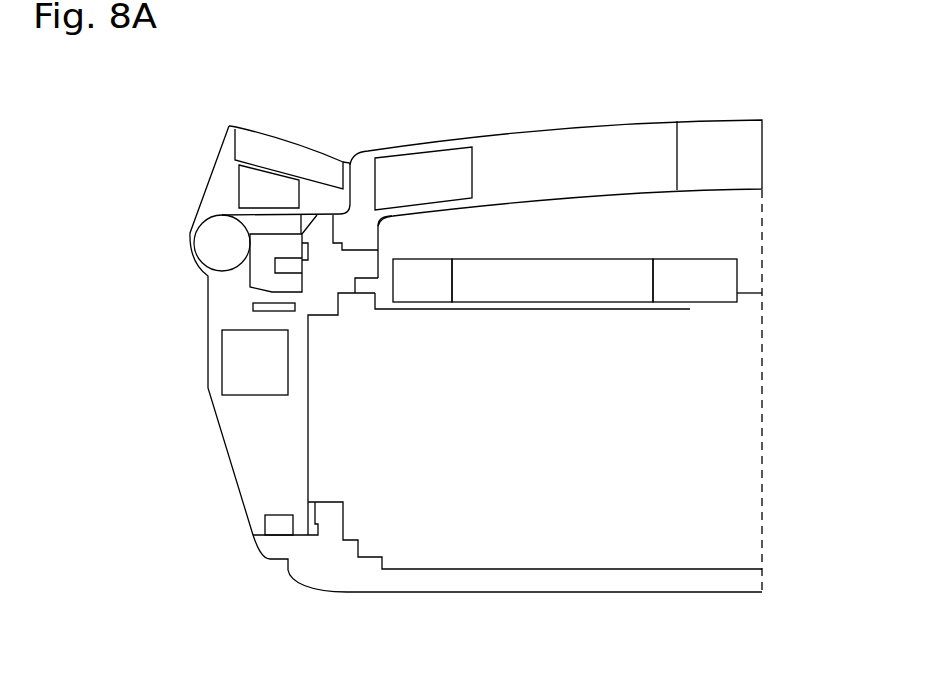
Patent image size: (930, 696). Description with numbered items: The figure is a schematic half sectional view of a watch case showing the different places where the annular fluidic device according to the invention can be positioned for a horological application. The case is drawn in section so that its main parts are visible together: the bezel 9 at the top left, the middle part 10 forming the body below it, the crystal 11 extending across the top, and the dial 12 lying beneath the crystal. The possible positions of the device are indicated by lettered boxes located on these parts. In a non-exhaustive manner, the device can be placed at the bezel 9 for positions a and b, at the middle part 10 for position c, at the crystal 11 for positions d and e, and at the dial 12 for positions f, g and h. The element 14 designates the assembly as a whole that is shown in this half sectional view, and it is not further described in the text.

The bezel 9 is at (225, 163).
The middle part 10 is at (252, 418).
The crystal 11 is at (583, 157).
The dial 12 is at (582, 307).
The device 14 is at (430, 319).